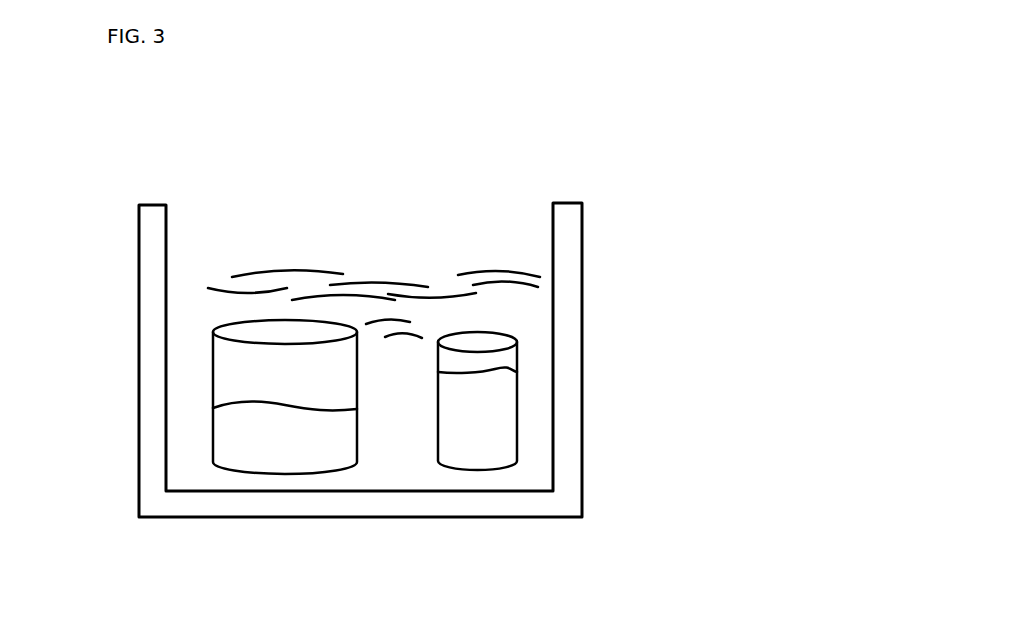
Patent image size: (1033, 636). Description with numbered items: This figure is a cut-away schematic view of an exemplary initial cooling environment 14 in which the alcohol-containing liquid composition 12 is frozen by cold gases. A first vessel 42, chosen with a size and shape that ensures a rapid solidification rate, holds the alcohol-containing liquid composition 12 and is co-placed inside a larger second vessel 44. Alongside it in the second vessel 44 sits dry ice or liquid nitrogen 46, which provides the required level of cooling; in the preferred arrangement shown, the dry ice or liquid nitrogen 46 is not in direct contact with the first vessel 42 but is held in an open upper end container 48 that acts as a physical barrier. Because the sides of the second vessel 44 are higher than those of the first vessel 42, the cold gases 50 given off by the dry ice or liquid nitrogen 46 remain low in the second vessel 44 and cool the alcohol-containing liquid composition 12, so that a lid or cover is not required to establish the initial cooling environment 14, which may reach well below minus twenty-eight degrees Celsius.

The initial cooling environment 14 is at (385, 368).
The cold gases 50 is at (482, 267).
The second vessel 44 is at (583, 343).
The open upper end container 48 is at (218, 461).
The dry ice or liquid nitrogen 46 is at (267, 454).
The first vessel 42 is at (571, 456).
The alcohol-containing liquid composition 12 is at (493, 442).